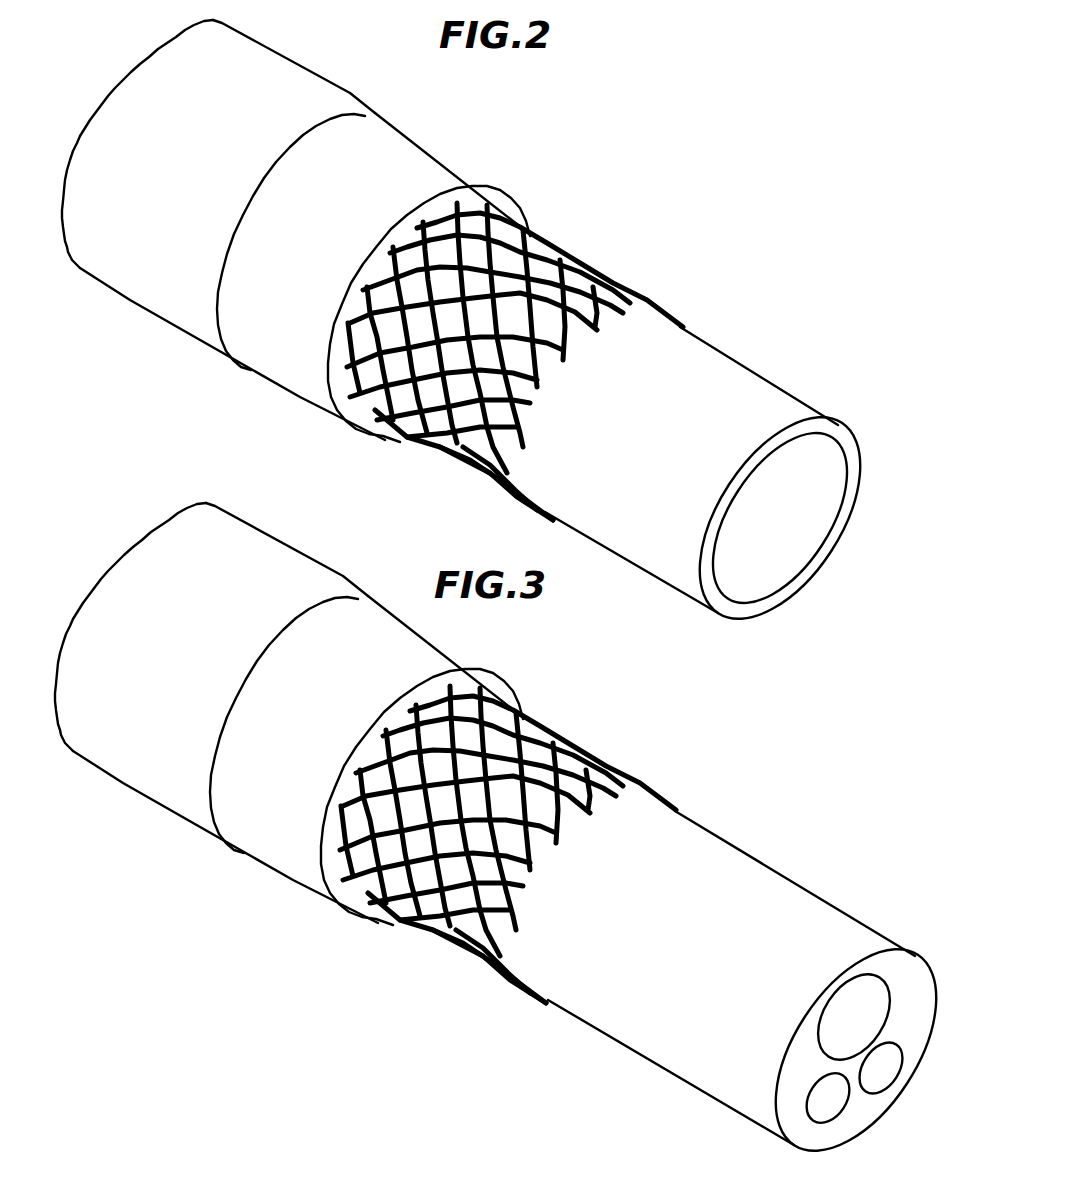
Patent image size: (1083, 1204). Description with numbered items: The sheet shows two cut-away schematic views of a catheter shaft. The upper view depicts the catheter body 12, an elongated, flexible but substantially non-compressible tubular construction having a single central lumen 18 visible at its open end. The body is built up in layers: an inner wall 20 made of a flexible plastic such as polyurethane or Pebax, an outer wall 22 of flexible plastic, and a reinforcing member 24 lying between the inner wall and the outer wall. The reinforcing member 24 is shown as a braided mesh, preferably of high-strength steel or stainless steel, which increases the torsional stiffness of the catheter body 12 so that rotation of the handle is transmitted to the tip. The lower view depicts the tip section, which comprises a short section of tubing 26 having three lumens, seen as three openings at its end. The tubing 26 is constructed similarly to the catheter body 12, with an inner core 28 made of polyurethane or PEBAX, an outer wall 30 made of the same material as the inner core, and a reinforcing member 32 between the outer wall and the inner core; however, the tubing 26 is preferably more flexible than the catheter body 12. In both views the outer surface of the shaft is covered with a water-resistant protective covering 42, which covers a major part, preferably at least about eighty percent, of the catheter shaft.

In FIG. 2, the catheter body 12 is at (552, 180).
In FIG. 2, the central lumen 18 is at (813, 457).
In FIG. 2, the inner wall 20 is at (602, 522).
In FIG. 2, the outer wall 22 is at (302, 377).
In FIG. 2, the reinforcing member 24 is at (400, 443).
In FIG. 3, the tubing 26 is at (612, 712).
In FIG. 3, the inner core 28 is at (742, 1093).
In FIG. 3, the outer wall 30 is at (293, 860).
In FIG. 3, the reinforcing member 32 is at (398, 923).
In FIG. 2, the protective covering 42 is at (267, 58).
In FIG. 3, the protective covering 42 is at (257, 548).